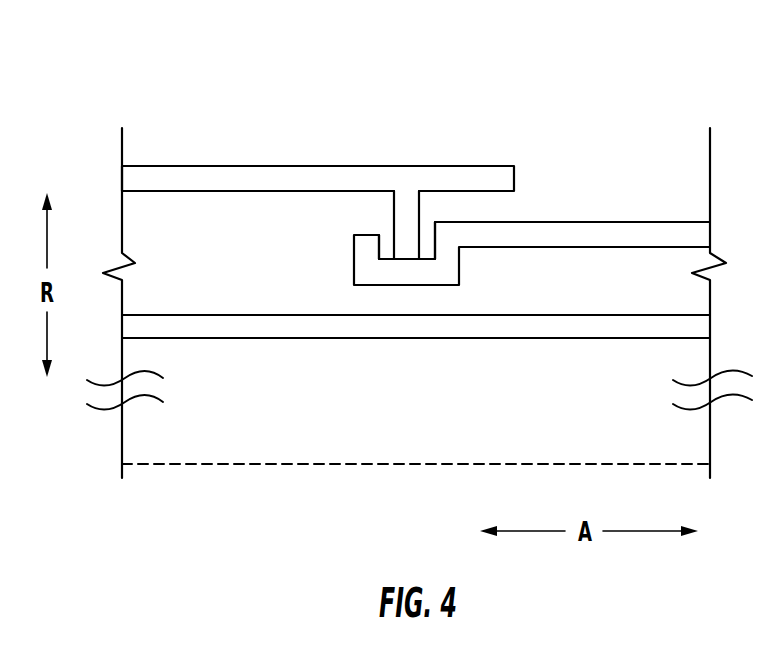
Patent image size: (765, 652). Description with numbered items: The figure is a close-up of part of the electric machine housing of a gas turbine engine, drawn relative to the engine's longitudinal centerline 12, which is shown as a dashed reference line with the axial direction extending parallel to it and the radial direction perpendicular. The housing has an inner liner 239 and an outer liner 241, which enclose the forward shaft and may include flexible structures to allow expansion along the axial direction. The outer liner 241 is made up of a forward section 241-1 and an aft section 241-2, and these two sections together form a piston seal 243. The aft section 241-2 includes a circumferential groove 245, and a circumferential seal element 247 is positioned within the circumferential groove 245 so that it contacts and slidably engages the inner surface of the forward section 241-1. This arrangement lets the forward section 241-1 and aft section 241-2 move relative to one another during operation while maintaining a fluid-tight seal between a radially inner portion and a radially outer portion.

The longitudinal centerline 12 is at (245, 464).
The inner liner 239 is at (432, 327).
The outer liner 241 is at (558, 70).
The forward section 241-1 is at (226, 165).
The aft section 241-2 is at (610, 222).
The piston seal 243 is at (318, 235).
The circumferential groove 245 is at (434, 210).
The circumferential seal element 247 is at (408, 210).